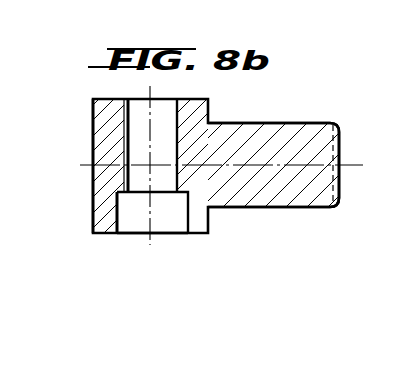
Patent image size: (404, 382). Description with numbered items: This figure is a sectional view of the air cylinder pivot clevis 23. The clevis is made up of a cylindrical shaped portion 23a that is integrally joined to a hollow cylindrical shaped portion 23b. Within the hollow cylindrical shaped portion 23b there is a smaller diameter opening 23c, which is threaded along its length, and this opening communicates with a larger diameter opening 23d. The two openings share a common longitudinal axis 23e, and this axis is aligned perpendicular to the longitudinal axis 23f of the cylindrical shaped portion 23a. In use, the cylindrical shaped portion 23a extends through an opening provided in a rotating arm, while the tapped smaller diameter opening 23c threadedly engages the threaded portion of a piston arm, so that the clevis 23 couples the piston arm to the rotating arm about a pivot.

The air cylinder pivot clevis 23 is at (110, 245).
The cylindrical shaped portion 23a is at (261, 208).
The hollow cylindrical shaped portion 23b is at (94, 210).
The smaller diameter opening 23c is at (130, 98).
The larger diameter opening 23d is at (181, 233).
The longitudinal axis of openings 23e is at (154, 234).
The longitudinal axis of cylindrical shaped portion 23f is at (357, 164).